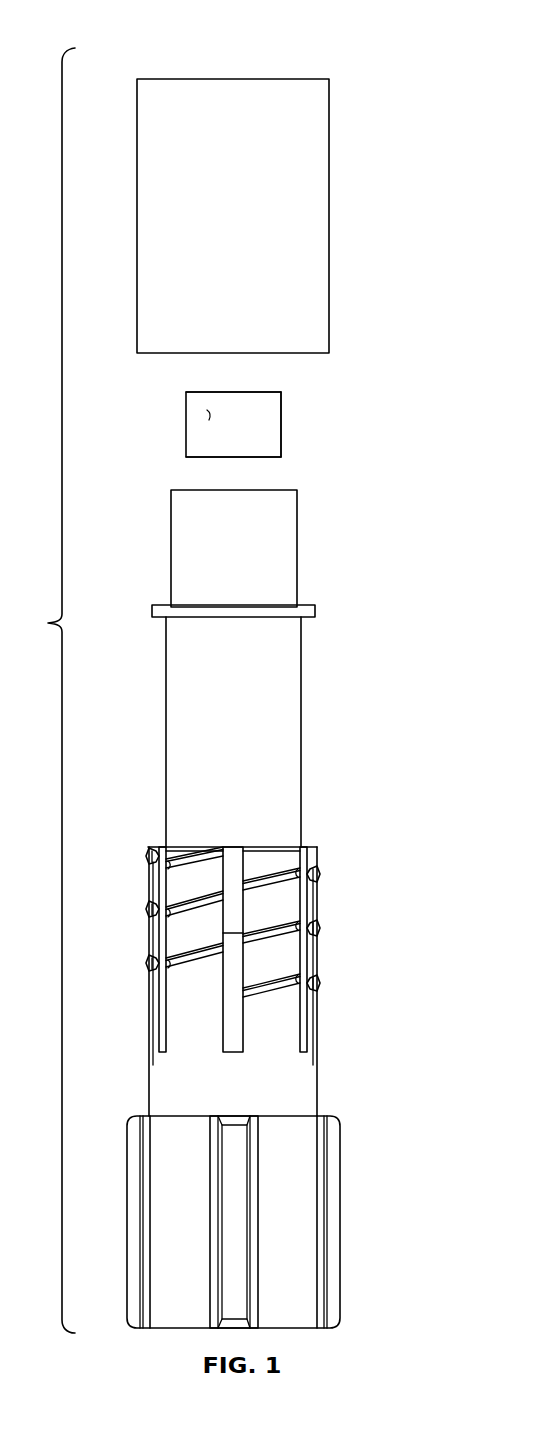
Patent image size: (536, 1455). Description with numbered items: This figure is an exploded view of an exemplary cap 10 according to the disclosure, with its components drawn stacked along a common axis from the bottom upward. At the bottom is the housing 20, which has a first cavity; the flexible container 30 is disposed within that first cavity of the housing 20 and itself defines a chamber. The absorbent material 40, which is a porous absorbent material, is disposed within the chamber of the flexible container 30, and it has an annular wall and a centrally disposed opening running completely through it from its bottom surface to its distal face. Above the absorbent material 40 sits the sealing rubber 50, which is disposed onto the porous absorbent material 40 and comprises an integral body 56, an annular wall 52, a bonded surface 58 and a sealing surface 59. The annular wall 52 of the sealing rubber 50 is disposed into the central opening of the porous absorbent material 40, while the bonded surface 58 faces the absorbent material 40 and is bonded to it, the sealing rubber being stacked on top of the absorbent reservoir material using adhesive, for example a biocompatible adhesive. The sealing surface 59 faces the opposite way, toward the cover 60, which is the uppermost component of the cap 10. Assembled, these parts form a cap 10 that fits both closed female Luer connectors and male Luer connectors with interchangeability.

The cap 10 is at (376, 36).
The housing 20 is at (245, 1102).
The flexible container 30 is at (283, 710).
The absorbent material 40 is at (282, 525).
The sealing rubber 50 is at (275, 410).
The annular wall 52 is at (282, 437).
The integral body 56 is at (209, 420).
The bonded surface 58 is at (218, 457).
The sealing surface 59 is at (205, 389).
The cover 60 is at (329, 131).